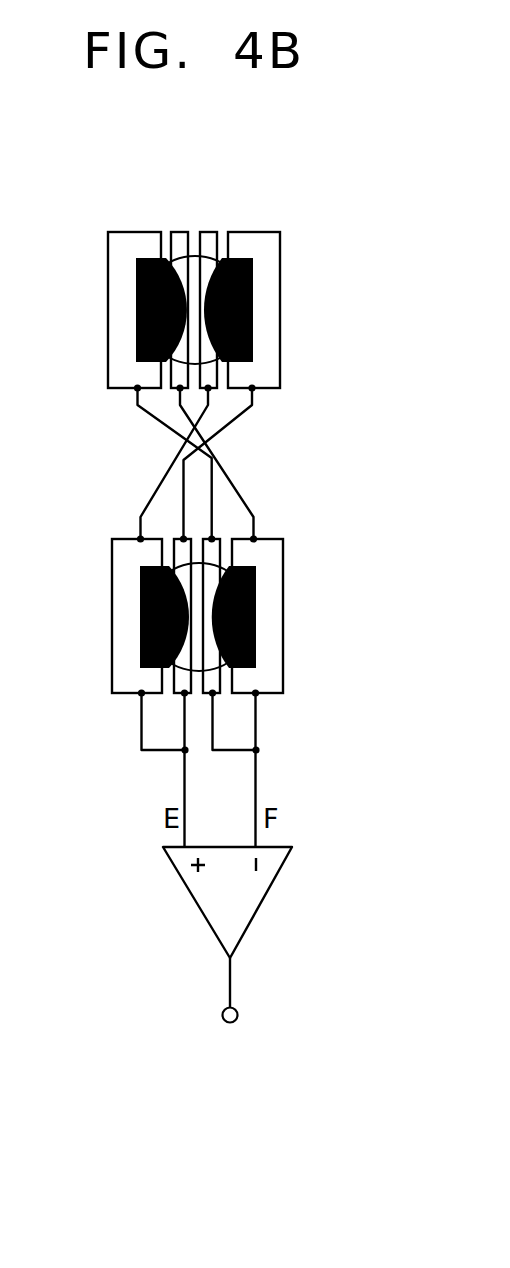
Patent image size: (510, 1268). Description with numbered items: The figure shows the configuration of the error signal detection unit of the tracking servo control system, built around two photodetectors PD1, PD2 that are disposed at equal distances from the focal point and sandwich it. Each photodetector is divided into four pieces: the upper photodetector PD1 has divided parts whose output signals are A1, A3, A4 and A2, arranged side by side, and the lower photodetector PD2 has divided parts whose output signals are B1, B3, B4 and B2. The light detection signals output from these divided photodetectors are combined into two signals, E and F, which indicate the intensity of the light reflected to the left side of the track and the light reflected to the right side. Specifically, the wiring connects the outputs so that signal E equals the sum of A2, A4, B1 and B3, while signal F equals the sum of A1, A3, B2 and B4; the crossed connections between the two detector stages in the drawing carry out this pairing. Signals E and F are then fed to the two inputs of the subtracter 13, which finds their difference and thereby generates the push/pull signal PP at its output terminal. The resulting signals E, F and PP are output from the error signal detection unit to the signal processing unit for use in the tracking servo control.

The subtracter 13 is at (267, 892).
The photodetector PD1 is at (146, 293).
The photodetector PD2 is at (147, 632).
The output signal of photodetector PD1 A1 is at (134, 291).
The output signal of photodetector PD1 A2 is at (254, 291).
The output signal of photodetector PD1 A3 is at (174, 291).
The output signal of photodetector PD1 A4 is at (213, 291).
The output signal of photodetector PD2 B1 is at (134, 602).
The output signal of photodetector PD2 B2 is at (259, 602).
The output signal of photodetector PD2 B3 is at (169, 602).
The output signal of photodetector PD2 B4 is at (224, 602).
The push/pull signal PP is at (230, 1034).